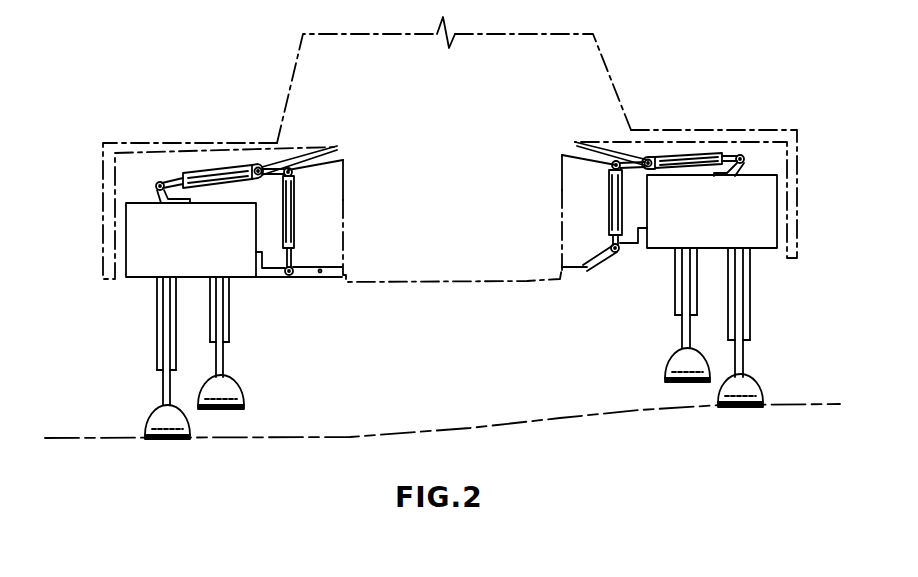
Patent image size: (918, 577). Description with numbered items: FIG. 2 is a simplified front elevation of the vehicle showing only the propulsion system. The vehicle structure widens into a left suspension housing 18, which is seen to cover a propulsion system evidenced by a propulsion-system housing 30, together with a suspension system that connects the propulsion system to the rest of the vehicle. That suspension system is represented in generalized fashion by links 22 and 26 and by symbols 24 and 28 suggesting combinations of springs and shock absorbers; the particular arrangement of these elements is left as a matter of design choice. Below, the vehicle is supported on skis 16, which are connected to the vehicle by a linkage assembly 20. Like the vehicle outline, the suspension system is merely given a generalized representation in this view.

The ski 16 is at (771, 383).
The left suspension housing 18 is at (770, 128).
The linkage assembly 20 is at (776, 312).
The link 22 is at (604, 281).
The spring and shock absorber combination 24 is at (584, 206).
The link 26 is at (618, 128).
The spring and shock absorber combination 28 is at (693, 128).
The propulsion-system housing 30 is at (751, 211).